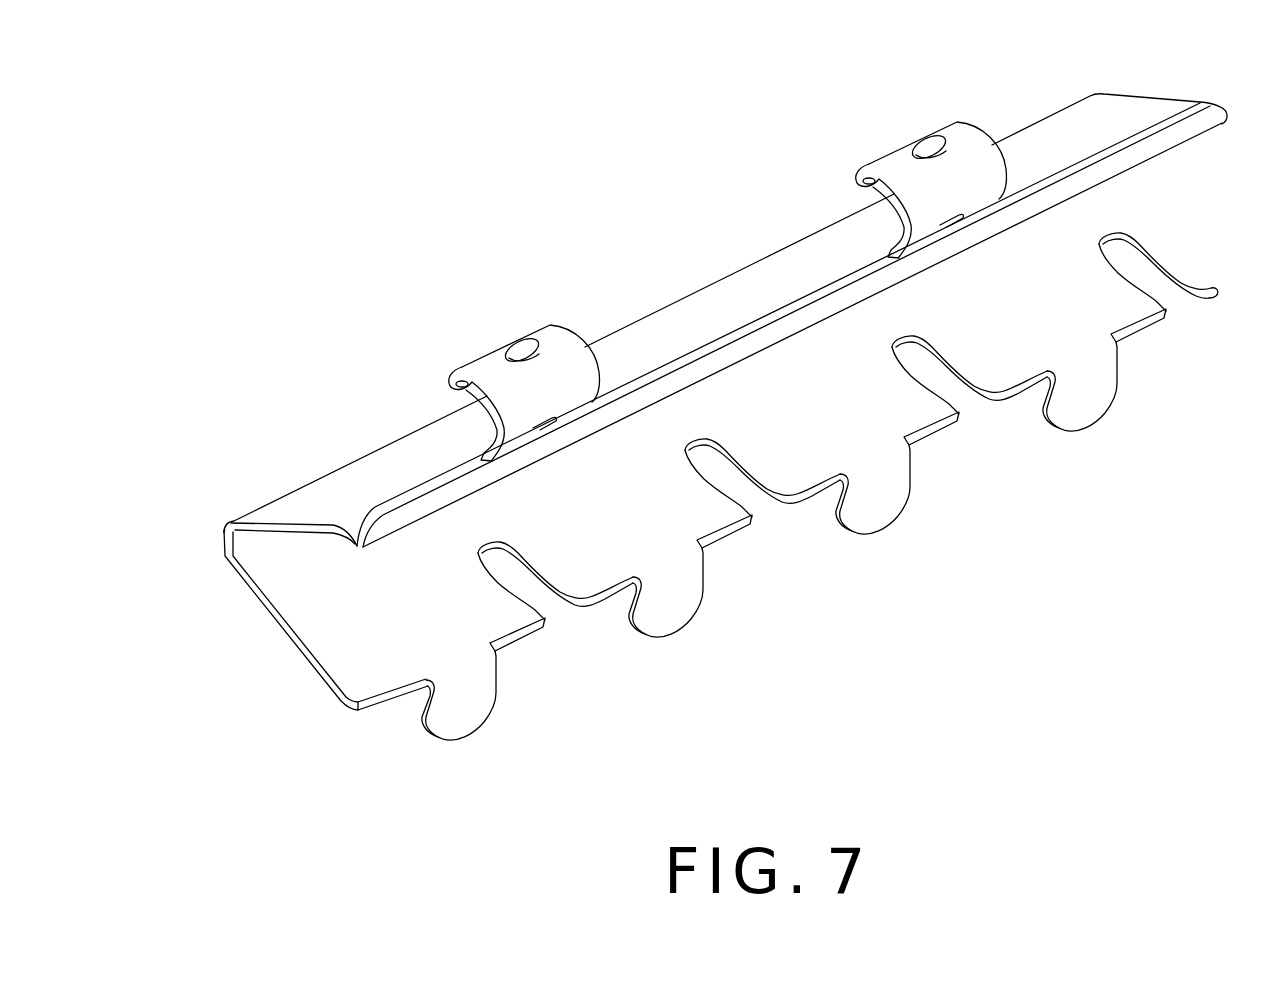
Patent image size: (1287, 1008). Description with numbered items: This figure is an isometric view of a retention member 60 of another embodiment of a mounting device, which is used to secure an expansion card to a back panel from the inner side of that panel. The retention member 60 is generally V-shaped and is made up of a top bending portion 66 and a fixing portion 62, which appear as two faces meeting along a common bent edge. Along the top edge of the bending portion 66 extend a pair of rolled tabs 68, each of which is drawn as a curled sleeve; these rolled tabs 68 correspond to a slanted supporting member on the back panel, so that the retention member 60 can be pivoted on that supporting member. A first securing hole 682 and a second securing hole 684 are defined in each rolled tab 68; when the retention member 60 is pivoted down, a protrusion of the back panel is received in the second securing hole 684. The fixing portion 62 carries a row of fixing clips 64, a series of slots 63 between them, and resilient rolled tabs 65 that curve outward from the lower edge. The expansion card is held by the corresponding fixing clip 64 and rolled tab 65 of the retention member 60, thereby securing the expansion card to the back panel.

The retention member 60 is at (430, 188).
The fixing portion 62 is at (342, 655).
The slots 63 is at (518, 587).
The fixing clips 64 is at (777, 473).
The resilient rolled tabs 65 is at (1092, 400).
The top bending portion 66 is at (343, 490).
The rolled tabs 68 is at (557, 357).
The first securing hole 682 is at (960, 212).
The second securing hole 684 is at (923, 147).